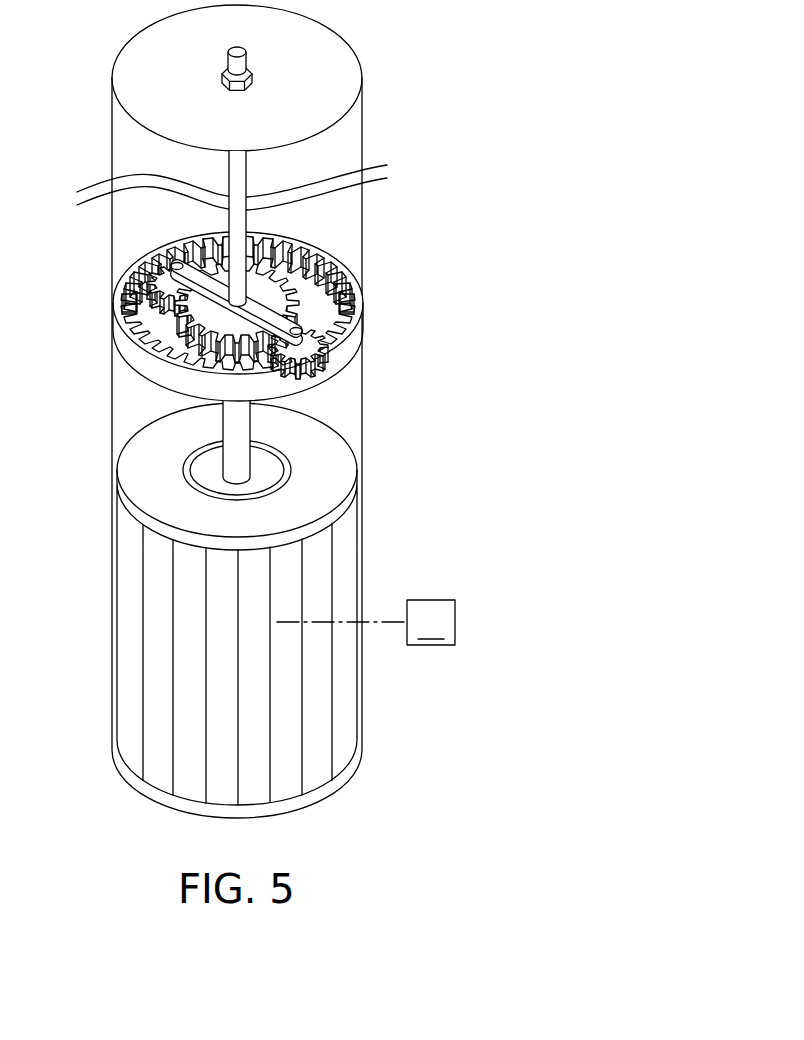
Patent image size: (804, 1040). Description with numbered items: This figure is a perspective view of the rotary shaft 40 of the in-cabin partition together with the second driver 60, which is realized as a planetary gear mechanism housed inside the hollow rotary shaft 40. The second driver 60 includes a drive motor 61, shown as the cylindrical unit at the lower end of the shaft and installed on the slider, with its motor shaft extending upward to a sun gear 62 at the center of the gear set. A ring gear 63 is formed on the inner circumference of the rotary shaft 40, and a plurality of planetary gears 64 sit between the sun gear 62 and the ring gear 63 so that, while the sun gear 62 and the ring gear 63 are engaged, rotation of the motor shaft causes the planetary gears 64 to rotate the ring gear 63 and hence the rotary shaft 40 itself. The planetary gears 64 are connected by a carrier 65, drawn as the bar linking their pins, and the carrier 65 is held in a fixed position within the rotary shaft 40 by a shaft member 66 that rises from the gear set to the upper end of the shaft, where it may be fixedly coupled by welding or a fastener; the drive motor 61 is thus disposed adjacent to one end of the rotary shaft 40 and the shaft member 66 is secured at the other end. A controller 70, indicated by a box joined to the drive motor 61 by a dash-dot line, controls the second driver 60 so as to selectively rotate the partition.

The rotary shaft 40 is at (362, 137).
The second driver 60 is at (337, 383).
The drive motor 61 is at (322, 560).
The sun gear 62 is at (333, 300).
The ring gear 63 is at (338, 253).
The planetary gears 64 is at (335, 333).
The carrier 65 is at (208, 282).
The shaft member 66 is at (233, 163).
The controller 70 is at (366, 622).